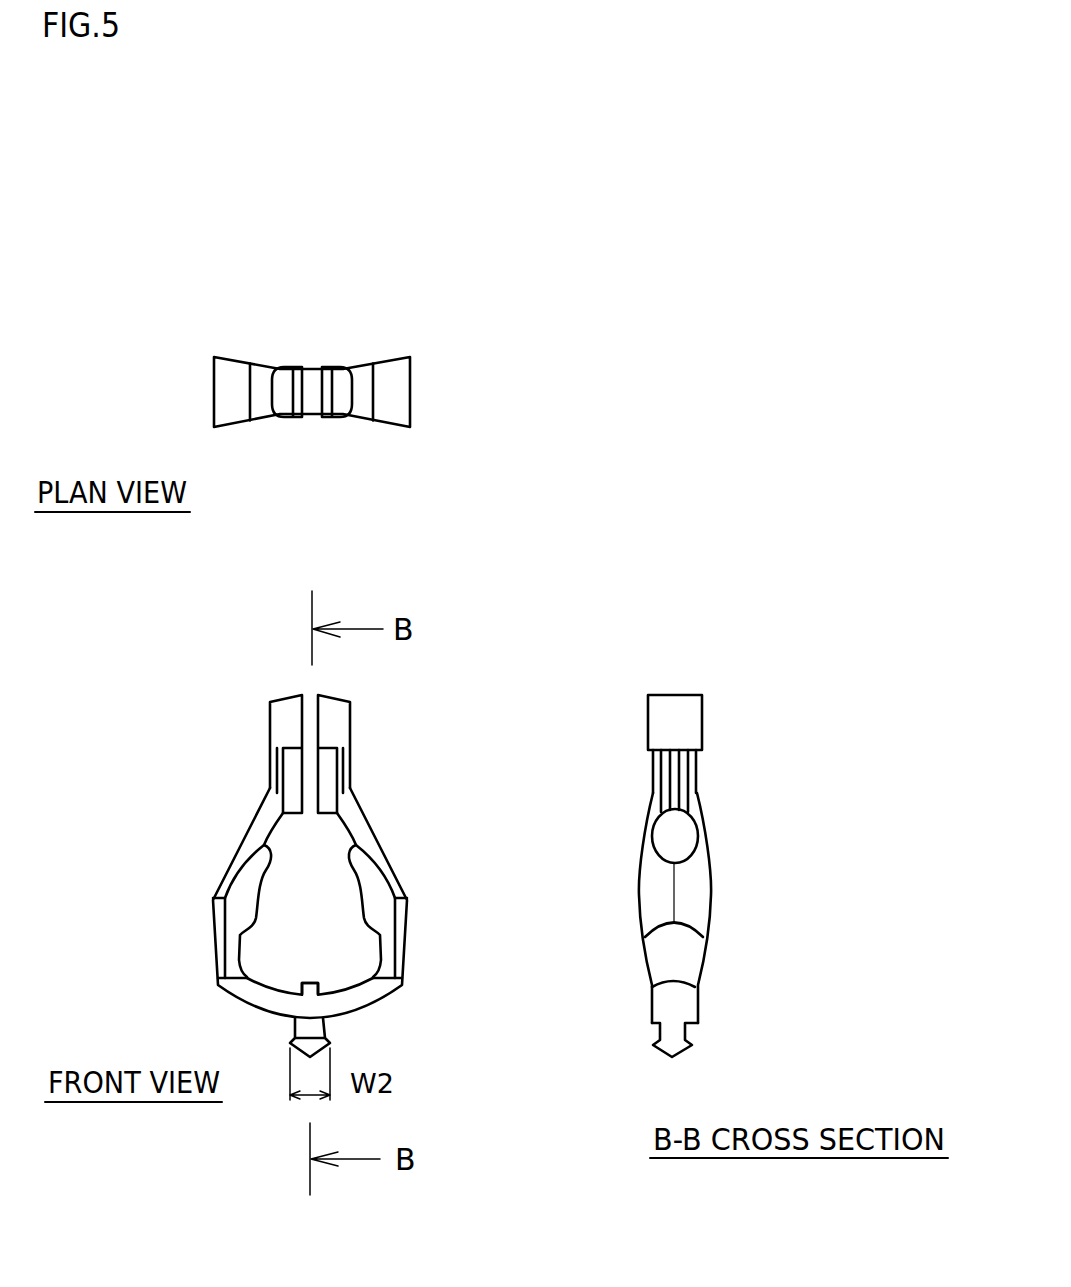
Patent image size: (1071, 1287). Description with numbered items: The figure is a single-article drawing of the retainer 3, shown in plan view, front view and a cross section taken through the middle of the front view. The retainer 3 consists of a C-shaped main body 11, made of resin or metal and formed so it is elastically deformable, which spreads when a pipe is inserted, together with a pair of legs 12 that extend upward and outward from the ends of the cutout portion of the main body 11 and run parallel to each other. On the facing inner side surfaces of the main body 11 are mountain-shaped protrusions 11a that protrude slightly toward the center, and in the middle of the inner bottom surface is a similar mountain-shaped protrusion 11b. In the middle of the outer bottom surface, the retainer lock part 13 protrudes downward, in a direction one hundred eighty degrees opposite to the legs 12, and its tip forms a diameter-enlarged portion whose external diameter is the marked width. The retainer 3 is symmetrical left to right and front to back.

The retainer 3 is at (782, 167).
The main body 11 is at (411, 377).
The protrusions 11a is at (243, 887).
The protrusion 11b is at (312, 981).
The legs 12 is at (290, 364).
The retainer lock part 13 is at (331, 1050).